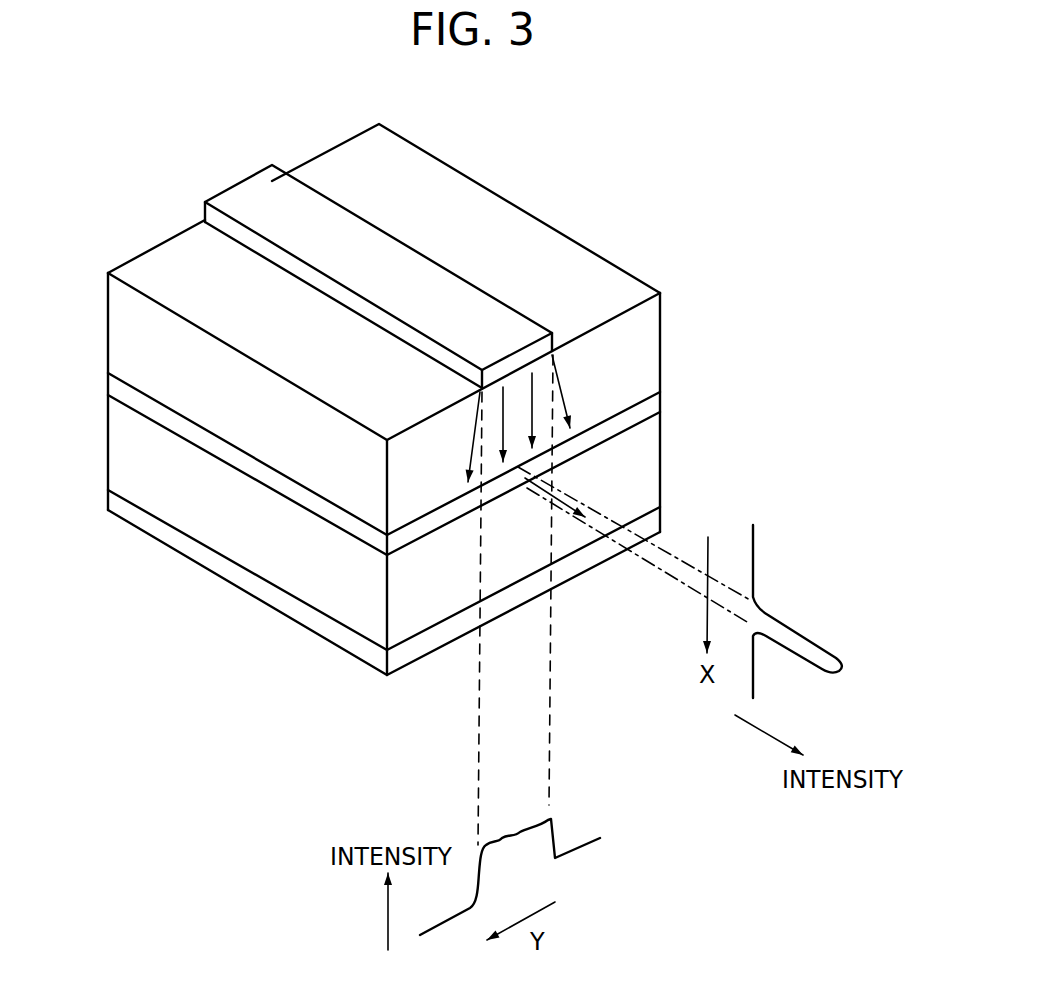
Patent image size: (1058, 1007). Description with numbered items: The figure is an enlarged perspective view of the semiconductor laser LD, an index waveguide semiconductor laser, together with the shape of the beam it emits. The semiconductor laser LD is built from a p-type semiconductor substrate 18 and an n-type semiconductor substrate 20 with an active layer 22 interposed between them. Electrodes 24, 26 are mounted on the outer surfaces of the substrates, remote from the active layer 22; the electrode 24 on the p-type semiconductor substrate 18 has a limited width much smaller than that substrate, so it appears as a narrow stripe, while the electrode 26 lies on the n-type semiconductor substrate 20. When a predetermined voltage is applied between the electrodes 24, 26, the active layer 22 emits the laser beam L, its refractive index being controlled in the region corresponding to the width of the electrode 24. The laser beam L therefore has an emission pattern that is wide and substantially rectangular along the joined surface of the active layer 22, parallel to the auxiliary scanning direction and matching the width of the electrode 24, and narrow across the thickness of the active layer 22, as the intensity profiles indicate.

The p-type semiconductor substrate 18 is at (652, 323).
The n-type semiconductor substrate 20 is at (645, 465).
The active layer 22 is at (653, 407).
The electrode 24 is at (303, 222).
The electrode 26 is at (580, 563).
The semiconductor laser LD is at (513, 187).
The laser beam L is at (562, 497).